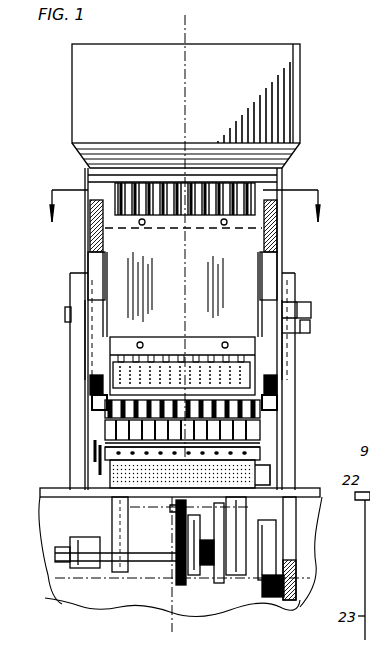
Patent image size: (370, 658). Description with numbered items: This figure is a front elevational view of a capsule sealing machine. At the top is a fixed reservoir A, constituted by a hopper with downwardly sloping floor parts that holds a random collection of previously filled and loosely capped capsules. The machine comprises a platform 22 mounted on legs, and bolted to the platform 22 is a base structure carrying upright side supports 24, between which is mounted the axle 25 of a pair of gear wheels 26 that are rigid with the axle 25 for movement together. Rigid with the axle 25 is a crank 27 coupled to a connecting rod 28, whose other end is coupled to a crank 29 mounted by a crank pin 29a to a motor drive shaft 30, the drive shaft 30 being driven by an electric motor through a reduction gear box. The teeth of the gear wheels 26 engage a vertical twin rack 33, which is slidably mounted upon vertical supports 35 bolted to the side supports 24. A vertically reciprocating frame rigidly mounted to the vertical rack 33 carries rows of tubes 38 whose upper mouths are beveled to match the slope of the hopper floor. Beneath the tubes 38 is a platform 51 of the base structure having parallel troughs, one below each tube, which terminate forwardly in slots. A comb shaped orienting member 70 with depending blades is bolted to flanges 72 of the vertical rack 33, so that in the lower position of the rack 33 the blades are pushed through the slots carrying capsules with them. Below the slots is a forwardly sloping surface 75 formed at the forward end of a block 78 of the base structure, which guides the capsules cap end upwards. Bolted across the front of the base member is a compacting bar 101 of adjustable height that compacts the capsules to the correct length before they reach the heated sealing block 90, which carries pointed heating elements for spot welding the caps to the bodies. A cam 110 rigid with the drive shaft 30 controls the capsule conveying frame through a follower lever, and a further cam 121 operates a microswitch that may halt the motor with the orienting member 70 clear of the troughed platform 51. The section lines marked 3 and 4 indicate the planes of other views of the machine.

The fixed reservoir A is at (72, 98).
The section line 3- 3 is at (183, 187).
The section line 4- 4 is at (215, 15).
The platform 22 is at (62, 489).
The upright side supports 24 is at (86, 348).
The axle 25 is at (313, 316).
The gear wheels 26 is at (90, 384).
The crank 27 is at (311, 330).
The connecting rod 28 is at (292, 516).
The crank 29 is at (275, 600).
The crank pin 29a is at (297, 574).
The motor drive shaft 30 is at (146, 556).
The vertical twin rack 33 is at (92, 241).
The vertical supports 35 is at (92, 264).
The tubes 38 is at (192, 222).
The platform 51 is at (108, 411).
The orienting member 70 is at (197, 339).
The flanges 72 is at (176, 311).
The forwardly sloping surface 75 is at (148, 388).
The block 78 is at (256, 425).
The heated sealing block 90 is at (86, 438).
The compacting bar 101 is at (256, 442).
The cam 110 is at (196, 583).
The cam 121 is at (231, 583).